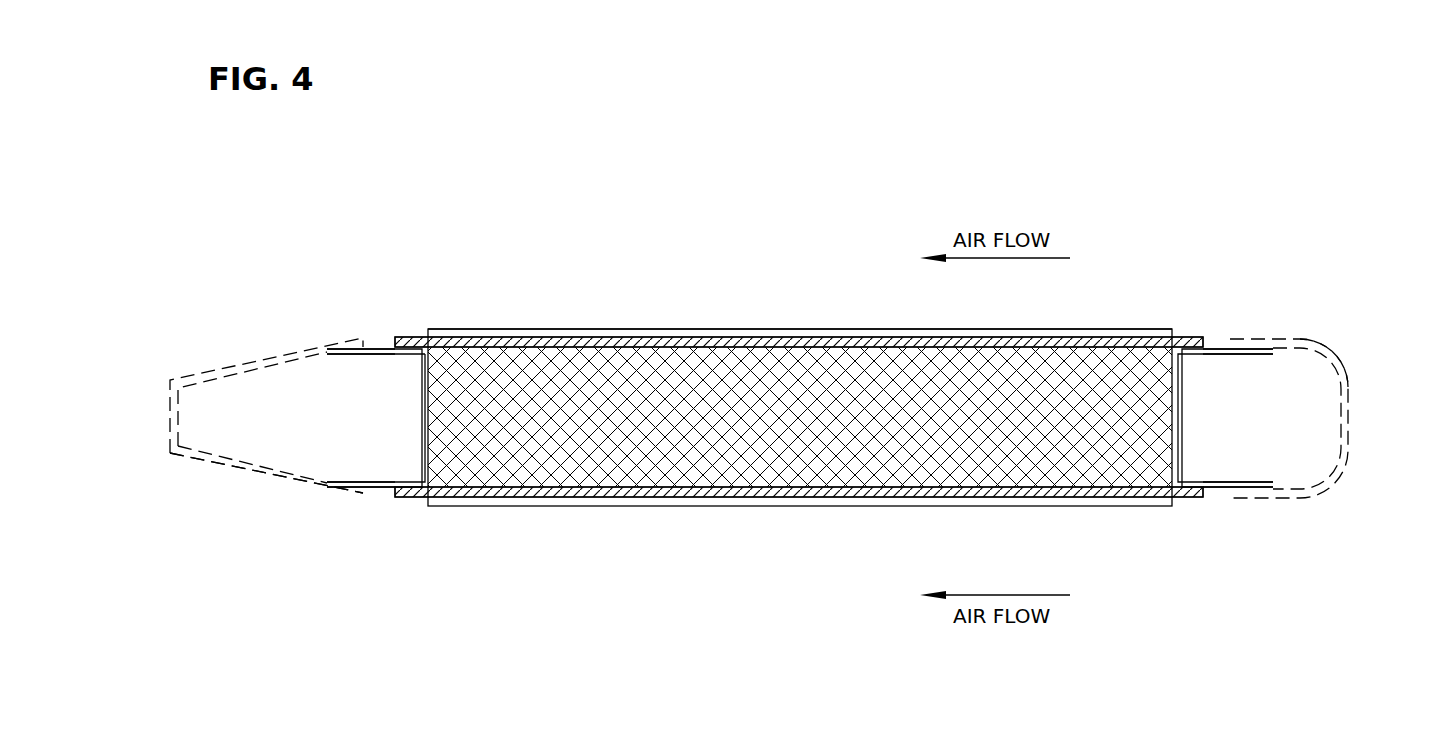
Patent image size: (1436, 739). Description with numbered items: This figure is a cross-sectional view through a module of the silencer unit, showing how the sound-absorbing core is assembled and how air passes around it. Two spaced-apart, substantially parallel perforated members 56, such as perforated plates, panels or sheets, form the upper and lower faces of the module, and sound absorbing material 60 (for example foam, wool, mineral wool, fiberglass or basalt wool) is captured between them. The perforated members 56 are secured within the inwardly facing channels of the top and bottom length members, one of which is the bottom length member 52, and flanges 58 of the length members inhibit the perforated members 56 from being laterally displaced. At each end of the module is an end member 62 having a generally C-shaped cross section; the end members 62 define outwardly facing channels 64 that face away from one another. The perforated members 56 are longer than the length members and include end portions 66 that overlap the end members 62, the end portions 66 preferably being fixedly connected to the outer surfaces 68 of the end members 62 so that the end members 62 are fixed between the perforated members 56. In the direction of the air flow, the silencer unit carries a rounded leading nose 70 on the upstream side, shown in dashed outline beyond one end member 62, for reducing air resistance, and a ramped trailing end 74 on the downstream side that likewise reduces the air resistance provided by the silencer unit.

The bottom length member 52 is at (520, 320).
The perforated member 56 is at (747, 345).
The flange 58 is at (450, 329).
The sound absorbing material 60 is at (890, 432).
The end member 62 is at (337, 326).
The outwardly facing channel 64 is at (350, 451).
The end portion 66 is at (400, 336).
The outer surface 68 is at (370, 347).
The rounded leading nose 70 is at (1349, 390).
The ramped trailing end 74 is at (225, 468).